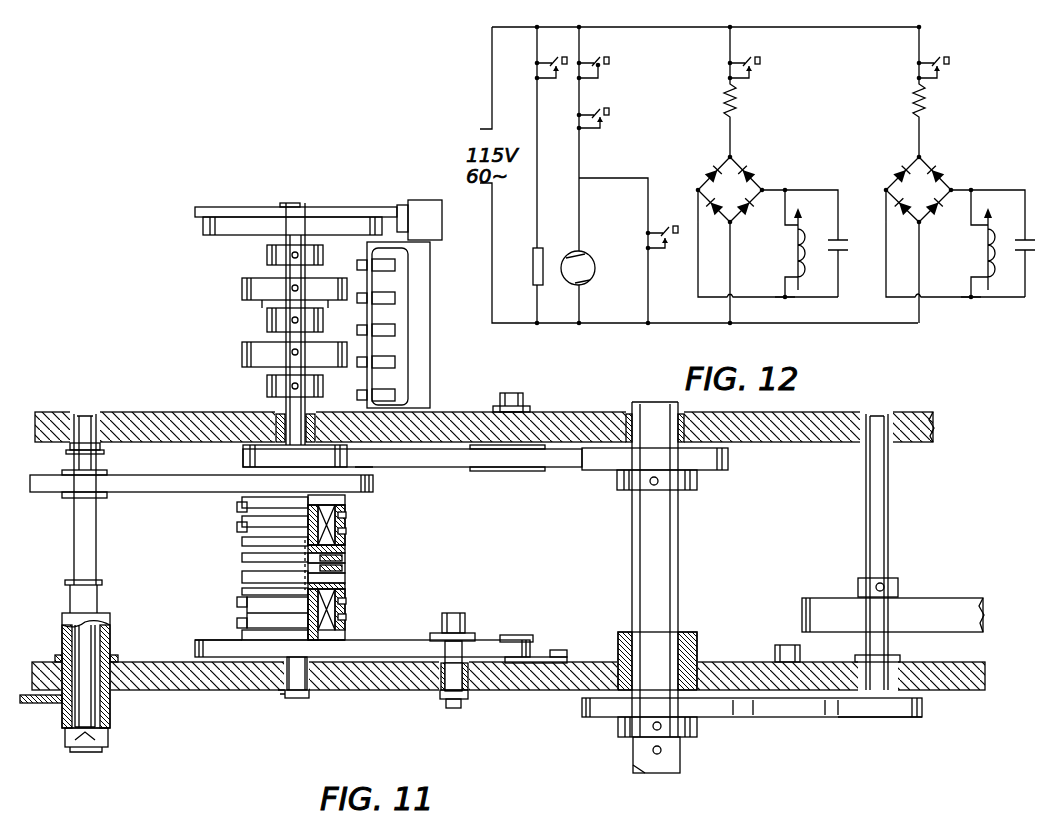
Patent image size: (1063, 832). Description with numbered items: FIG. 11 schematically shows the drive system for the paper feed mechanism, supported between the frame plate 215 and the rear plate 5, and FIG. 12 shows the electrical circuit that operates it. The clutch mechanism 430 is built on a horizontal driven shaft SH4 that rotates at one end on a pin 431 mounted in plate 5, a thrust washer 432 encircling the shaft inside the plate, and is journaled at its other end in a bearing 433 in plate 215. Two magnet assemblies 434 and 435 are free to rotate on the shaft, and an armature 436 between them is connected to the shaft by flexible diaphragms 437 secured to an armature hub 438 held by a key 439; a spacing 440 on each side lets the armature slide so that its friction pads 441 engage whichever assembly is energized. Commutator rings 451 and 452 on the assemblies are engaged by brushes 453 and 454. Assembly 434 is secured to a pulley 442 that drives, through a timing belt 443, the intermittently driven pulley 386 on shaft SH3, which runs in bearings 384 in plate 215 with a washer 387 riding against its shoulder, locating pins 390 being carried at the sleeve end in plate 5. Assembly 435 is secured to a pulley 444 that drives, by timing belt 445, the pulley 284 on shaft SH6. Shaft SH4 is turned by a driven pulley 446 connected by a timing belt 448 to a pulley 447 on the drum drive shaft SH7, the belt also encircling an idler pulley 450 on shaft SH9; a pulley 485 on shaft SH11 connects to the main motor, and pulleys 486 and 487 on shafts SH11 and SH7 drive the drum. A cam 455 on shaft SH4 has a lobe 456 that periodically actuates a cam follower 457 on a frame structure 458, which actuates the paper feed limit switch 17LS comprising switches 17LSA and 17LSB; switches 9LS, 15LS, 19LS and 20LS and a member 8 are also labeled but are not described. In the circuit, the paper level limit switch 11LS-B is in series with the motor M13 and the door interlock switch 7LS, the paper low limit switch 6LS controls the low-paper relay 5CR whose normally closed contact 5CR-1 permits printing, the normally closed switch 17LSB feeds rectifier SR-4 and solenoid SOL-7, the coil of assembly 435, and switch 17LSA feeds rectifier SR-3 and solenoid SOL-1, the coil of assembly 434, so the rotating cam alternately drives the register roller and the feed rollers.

In FIG. 11, the frame plate 215 is at (138, 404).
In FIG. 11, the rear plate 5 is at (163, 691).
In FIG. 11, the shaft SH3 is at (73, 551).
In FIG. 11, the locating pins 390 is at (88, 748).
In FIG. 11, the bearings 384 is at (70, 447).
In FIG. 11, the washer 387 is at (100, 448).
In FIG. 11, the intermittently driven pulley 386 is at (66, 498).
In FIG. 11, the timing belt 443 is at (160, 493).
In FIG. 11, the driven shaft SH4 is at (284, 404).
In FIG. 11, the frame structure 458 is at (425, 246).
In FIG. 11, the cam follower 457 is at (372, 292).
In FIG. 11, the rotatable cam 455 is at (243, 302).
In FIG. 11, the cam lobe 456 is at (264, 305).
In FIG. 11, the limit switch 9LS is at (395, 265).
In FIG. 11, the paper feed limit switch 17LS is at (395, 298).
In FIG. 11, the limit switch 15LS is at (395, 330).
In FIG. 11, the limit switch 19LS is at (395, 362).
In FIG. 11, the limit switch 20LS is at (395, 395).
In FIG. 11, the bearing 433 is at (312, 430).
In FIG. 11, the driven pulley 446 is at (243, 450).
In FIG. 11, the timing belt 448 is at (490, 470).
In FIG. 11, the idler pulley 450 is at (530, 471).
In FIG. 11, the pulley 447 is at (612, 474).
In FIG. 11, the pulley 442 is at (372, 470).
In FIG. 11, the clutch mechanism 430 is at (220, 557).
In FIG. 11, the commutator rings 451 is at (345, 500).
In FIG. 11, the magnet assembly 434 is at (342, 518).
In FIG. 12, the magnet assembly 434 is at (980, 247).
In FIG. 11, the spacing 440 is at (345, 541).
In FIG. 11, the friction pads 441 is at (345, 558).
In FIG. 11, the armature 436 is at (345, 568).
In FIG. 11, the flexible metallic diaphragms 437 is at (345, 578).
In FIG. 11, the armature hub 438 is at (345, 587).
In FIG. 11, the commutator rings 452 is at (345, 622).
In FIG. 11, the key 439 is at (305, 566).
In FIG. 11, the brushes 453 is at (237, 527).
In FIG. 12, the brushes 453 is at (971, 289).
In FIG. 11, the brushes 454 is at (237, 623).
In FIG. 12, the brushes 454 is at (785, 289).
In FIG. 11, the pulley 444 is at (215, 636).
In FIG. 11, the timing belt 445 is at (243, 658).
In FIG. 11, the pin 431 is at (300, 699).
In FIG. 11, the thrust washer 432 is at (325, 658).
In FIG. 11, the magnet assembly 435 is at (345, 641).
In FIG. 12, the magnet assembly 435 is at (790, 247).
In FIG. 11, the pulley 284 is at (472, 599).
In FIG. 11, the shaft SH6 is at (458, 709).
In FIG. 11, the frame member 8 is at (513, 635).
In FIG. 11, the shaft SH9 is at (524, 396).
In FIG. 11, the drum drive shaft SH7 is at (631, 550).
In FIG. 11, the pulley 487 is at (725, 718).
In FIG. 11, the pulley 486 is at (902, 718).
In FIG. 11, the shaft SH11 is at (889, 510).
In FIG. 11, the pulley 485 is at (858, 583).
In FIG. 12, the paper low limit switch 6LS is at (552, 60).
In FIG. 12, the low-paper relay 5CR is at (533, 265).
In FIG. 12, the door interlock switch 7LS is at (596, 42).
In FIG. 12, the paper level limit switch 11LS-B is at (594, 110).
In FIG. 12, the motor M13 is at (592, 283).
In FIG. 12, the normally closed switch 5CR-1 is at (660, 226).
In FIG. 12, the switch 17LSB is at (742, 60).
In FIG. 12, the D.C. rectifier SR-4 is at (740, 162).
In FIG. 12, the solenoid SOL-7 is at (806, 230).
In FIG. 12, the switch 17LSA is at (930, 58).
In FIG. 12, the D.C. rectifier SR-3 is at (928, 162).
In FIG. 12, the solenoid SOL-1 is at (995, 230).